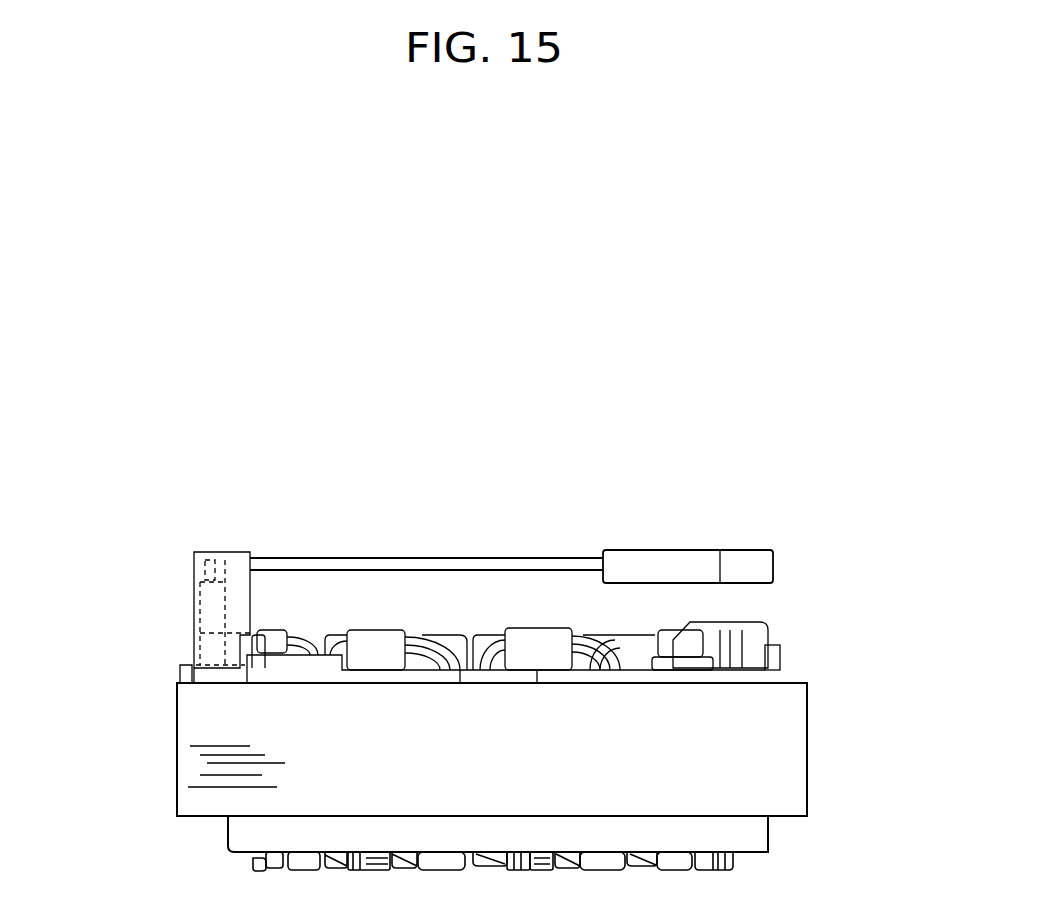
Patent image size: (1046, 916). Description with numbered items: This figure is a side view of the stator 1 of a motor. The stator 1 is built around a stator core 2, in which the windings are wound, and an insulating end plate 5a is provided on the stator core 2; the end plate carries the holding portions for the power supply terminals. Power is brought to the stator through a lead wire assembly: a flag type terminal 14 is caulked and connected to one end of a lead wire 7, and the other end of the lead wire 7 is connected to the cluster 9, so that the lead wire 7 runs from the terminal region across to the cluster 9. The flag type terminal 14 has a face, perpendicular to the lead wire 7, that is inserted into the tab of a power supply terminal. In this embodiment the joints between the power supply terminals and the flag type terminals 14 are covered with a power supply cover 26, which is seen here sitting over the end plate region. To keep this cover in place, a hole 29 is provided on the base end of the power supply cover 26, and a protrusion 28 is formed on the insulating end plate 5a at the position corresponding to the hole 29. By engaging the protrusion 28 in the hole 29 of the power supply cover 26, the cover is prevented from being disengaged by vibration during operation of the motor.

The stator 1 is at (806, 758).
The stator core 2 is at (210, 802).
The insulating end plate 5a is at (220, 672).
The lead wire 7 is at (497, 563).
The cluster 9 is at (668, 568).
The flag type terminal 14 is at (190, 597).
The power supply cover 26 is at (193, 557).
The protrusion 28 is at (180, 670).
The hole 29 is at (197, 683).